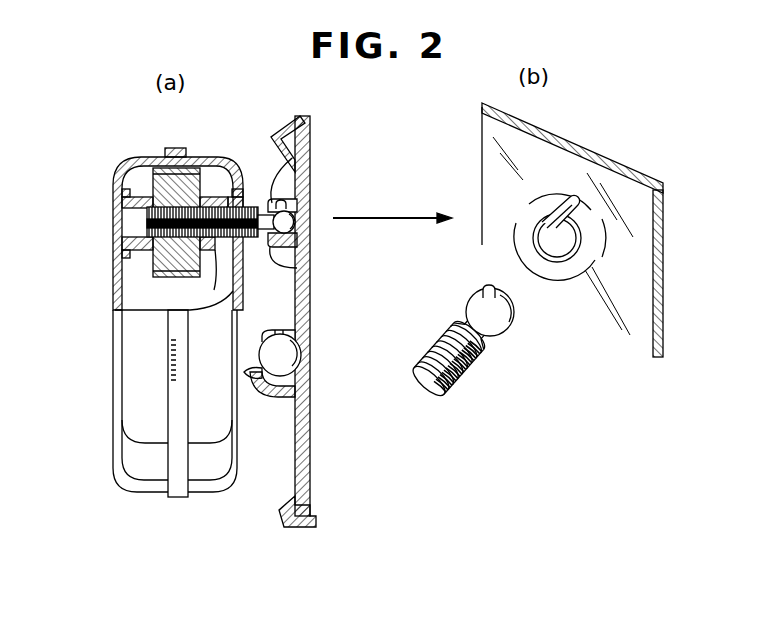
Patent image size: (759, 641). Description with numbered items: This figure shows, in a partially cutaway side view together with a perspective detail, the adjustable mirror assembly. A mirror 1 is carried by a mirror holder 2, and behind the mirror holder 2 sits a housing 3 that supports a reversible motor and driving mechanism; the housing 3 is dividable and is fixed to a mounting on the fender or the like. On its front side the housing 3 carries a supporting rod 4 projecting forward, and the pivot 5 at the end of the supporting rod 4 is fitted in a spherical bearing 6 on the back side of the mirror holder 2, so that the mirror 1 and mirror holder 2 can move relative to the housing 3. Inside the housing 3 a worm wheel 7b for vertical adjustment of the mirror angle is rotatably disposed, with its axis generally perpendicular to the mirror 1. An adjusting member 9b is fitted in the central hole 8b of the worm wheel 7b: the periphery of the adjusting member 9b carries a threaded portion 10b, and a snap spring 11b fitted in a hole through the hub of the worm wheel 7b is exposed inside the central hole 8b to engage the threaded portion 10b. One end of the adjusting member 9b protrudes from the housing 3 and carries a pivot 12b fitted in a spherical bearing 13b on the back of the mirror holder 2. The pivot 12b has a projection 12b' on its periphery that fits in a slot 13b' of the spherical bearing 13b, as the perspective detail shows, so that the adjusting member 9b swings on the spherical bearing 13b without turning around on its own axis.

The mirror 1 is at (312, 301).
The mirror holder 2 is at (490, 147).
The housing 3 is at (118, 283).
The supporting rod 4 is at (240, 373).
The pivot 5 is at (300, 392).
The spherical bearing 6 is at (263, 330).
The worm wheel 7b is at (118, 266).
The central hole 8b is at (118, 218).
The adjusting member 9b is at (215, 208).
The threaded portion 10b is at (256, 210).
The snap spring 11b is at (214, 252).
The pivot 12b is at (424, 296).
The projection 12b' is at (385, 236).
The spherical bearing 13b is at (446, 277).
The slot 13b' is at (446, 184).